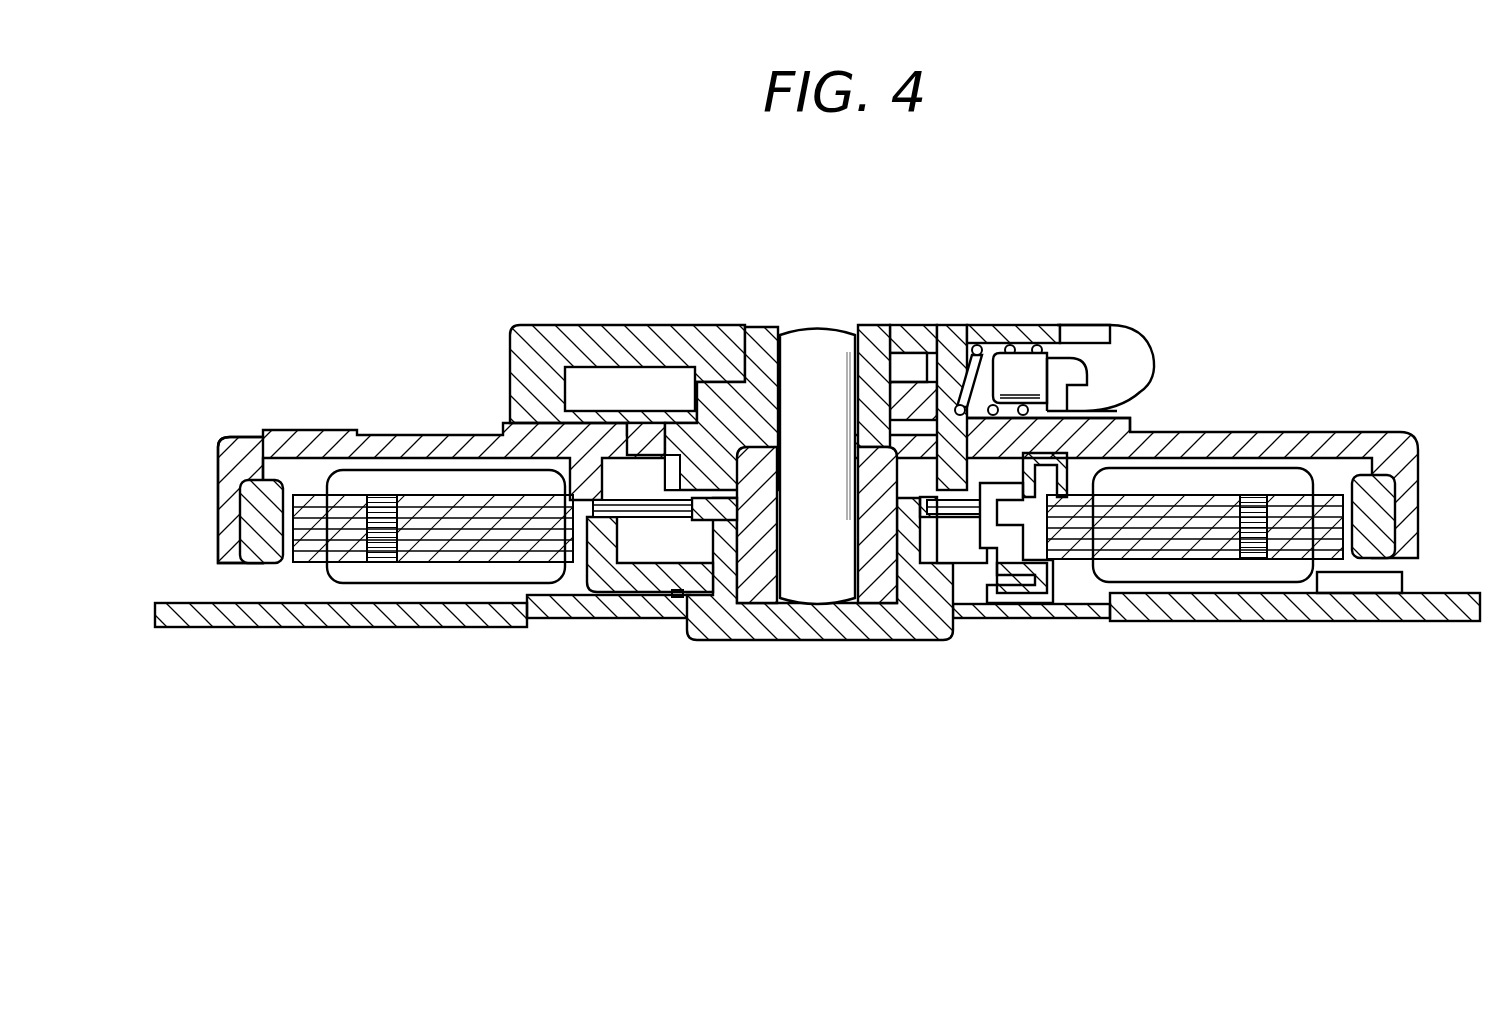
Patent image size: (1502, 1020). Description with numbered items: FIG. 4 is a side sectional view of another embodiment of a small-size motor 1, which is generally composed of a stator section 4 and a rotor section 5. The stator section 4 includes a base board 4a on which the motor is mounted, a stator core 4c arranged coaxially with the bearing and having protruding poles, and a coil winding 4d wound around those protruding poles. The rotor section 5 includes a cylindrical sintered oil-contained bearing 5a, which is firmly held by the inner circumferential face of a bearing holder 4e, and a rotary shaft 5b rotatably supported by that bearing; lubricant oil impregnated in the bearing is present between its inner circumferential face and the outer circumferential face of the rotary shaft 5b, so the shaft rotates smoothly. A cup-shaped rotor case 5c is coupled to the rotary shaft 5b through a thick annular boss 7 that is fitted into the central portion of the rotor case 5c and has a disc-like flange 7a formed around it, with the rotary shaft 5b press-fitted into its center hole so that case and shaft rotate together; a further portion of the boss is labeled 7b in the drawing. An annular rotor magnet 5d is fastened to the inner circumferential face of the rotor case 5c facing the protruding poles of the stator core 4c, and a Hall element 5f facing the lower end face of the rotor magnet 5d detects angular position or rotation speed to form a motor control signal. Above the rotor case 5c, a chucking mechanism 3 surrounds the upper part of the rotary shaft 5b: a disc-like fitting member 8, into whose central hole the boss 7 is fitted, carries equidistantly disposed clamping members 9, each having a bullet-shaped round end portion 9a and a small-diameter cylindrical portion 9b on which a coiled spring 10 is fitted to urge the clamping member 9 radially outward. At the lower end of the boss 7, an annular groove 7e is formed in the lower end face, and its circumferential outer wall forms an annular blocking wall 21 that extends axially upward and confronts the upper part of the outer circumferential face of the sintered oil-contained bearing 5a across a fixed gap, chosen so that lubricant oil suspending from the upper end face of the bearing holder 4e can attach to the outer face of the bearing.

The motor 1 is at (1372, 417).
The chucking mechanism 3 is at (1082, 304).
The stator section 4 is at (1171, 609).
The base board 4a is at (1282, 612).
The stator core 4c is at (1290, 693).
The coil winding 4d is at (1208, 573).
The bearing holder 4e is at (913, 641).
The rotor section 5 is at (585, 690).
The sintered oil-contained bearing 5a is at (750, 605).
The rotary shaft 5b is at (690, 588).
The rotor case 5c is at (229, 560).
The rotor magnet 5d is at (281, 554).
The Hall element 5f is at (1400, 586).
The boss 7 is at (856, 340).
The disc-like flange 7a is at (680, 405).
The rotor hub 7b is at (767, 400).
The annular groove 7e is at (920, 487).
The fitting member 8 is at (723, 323).
The clamping member 9 is at (1152, 328).
The round end portion 9a is at (1133, 367).
The cylindrical portion 9b is at (1022, 365).
The coiled spring 10 is at (966, 335).
The blocking wall 21 is at (665, 423).